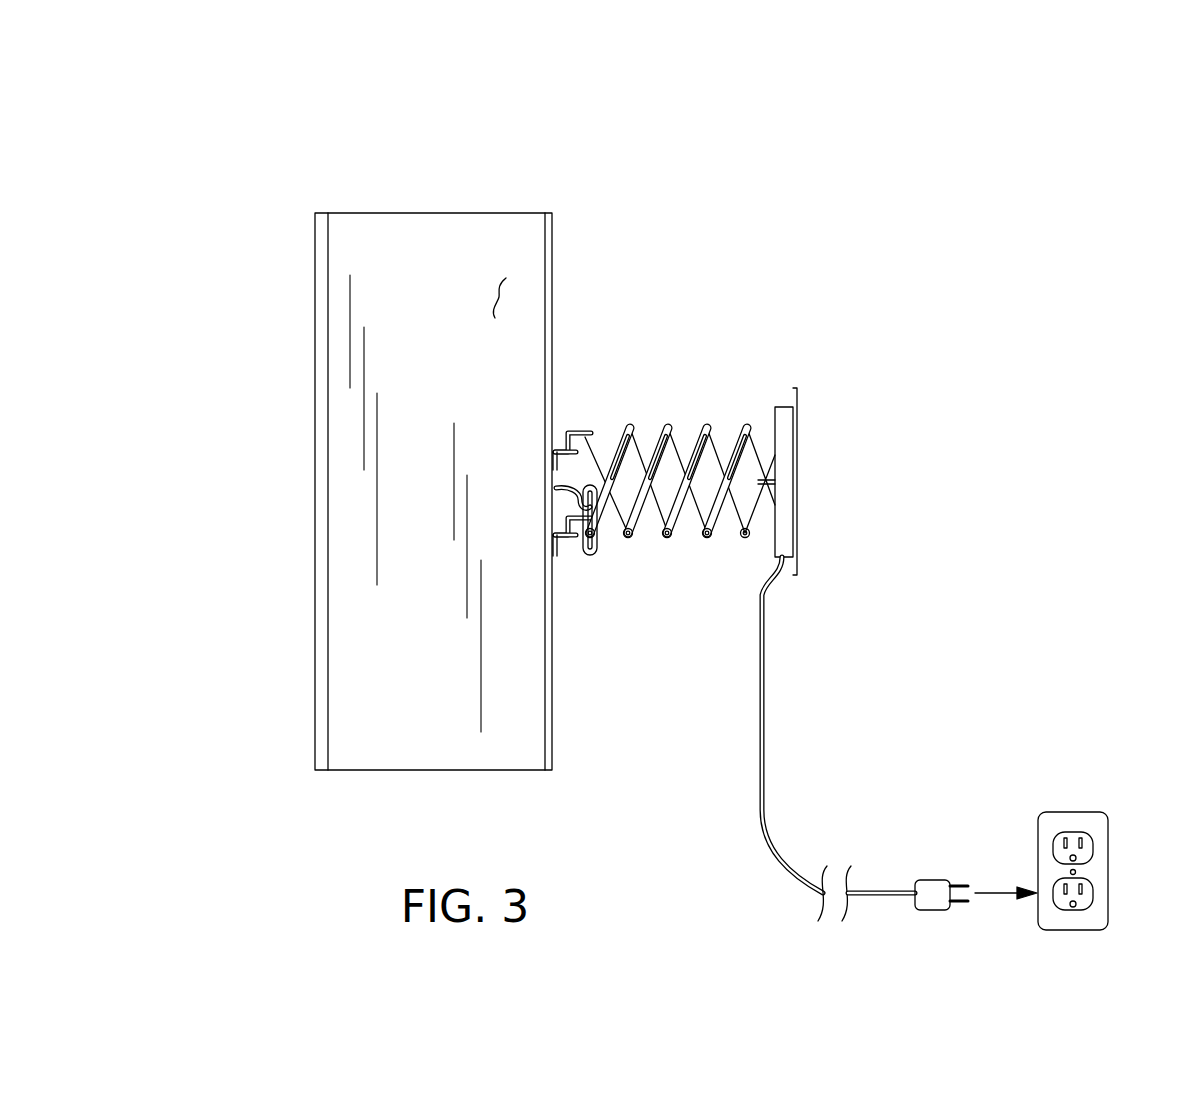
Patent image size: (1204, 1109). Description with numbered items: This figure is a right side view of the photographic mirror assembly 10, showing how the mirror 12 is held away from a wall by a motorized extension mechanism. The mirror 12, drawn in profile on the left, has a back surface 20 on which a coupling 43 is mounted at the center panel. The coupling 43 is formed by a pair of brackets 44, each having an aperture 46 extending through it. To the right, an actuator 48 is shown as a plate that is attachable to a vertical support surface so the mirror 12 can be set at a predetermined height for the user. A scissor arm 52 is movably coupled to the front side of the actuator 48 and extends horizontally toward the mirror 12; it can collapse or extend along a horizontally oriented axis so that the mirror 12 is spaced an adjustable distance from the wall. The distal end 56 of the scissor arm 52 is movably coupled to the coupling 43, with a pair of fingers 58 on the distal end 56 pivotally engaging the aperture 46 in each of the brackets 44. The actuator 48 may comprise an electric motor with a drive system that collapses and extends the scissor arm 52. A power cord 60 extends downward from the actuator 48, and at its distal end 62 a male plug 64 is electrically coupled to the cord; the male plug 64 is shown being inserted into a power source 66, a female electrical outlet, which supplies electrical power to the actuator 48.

The photographic mirror assembly 10 is at (701, 471).
The mirror 12 is at (428, 142).
The back surface 20 is at (499, 297).
The coupling 43 is at (554, 558).
The brackets 44 is at (561, 432).
The aperture 46 is at (581, 440).
The actuator 48 is at (782, 407).
The scissor arm 52 is at (683, 585).
The distal end 56 is at (587, 485).
The fingers 58 is at (606, 430).
The power cord 60 is at (760, 715).
The distal end 62 is at (878, 892).
The male plug 64 is at (938, 882).
The power source 66 is at (1073, 820).